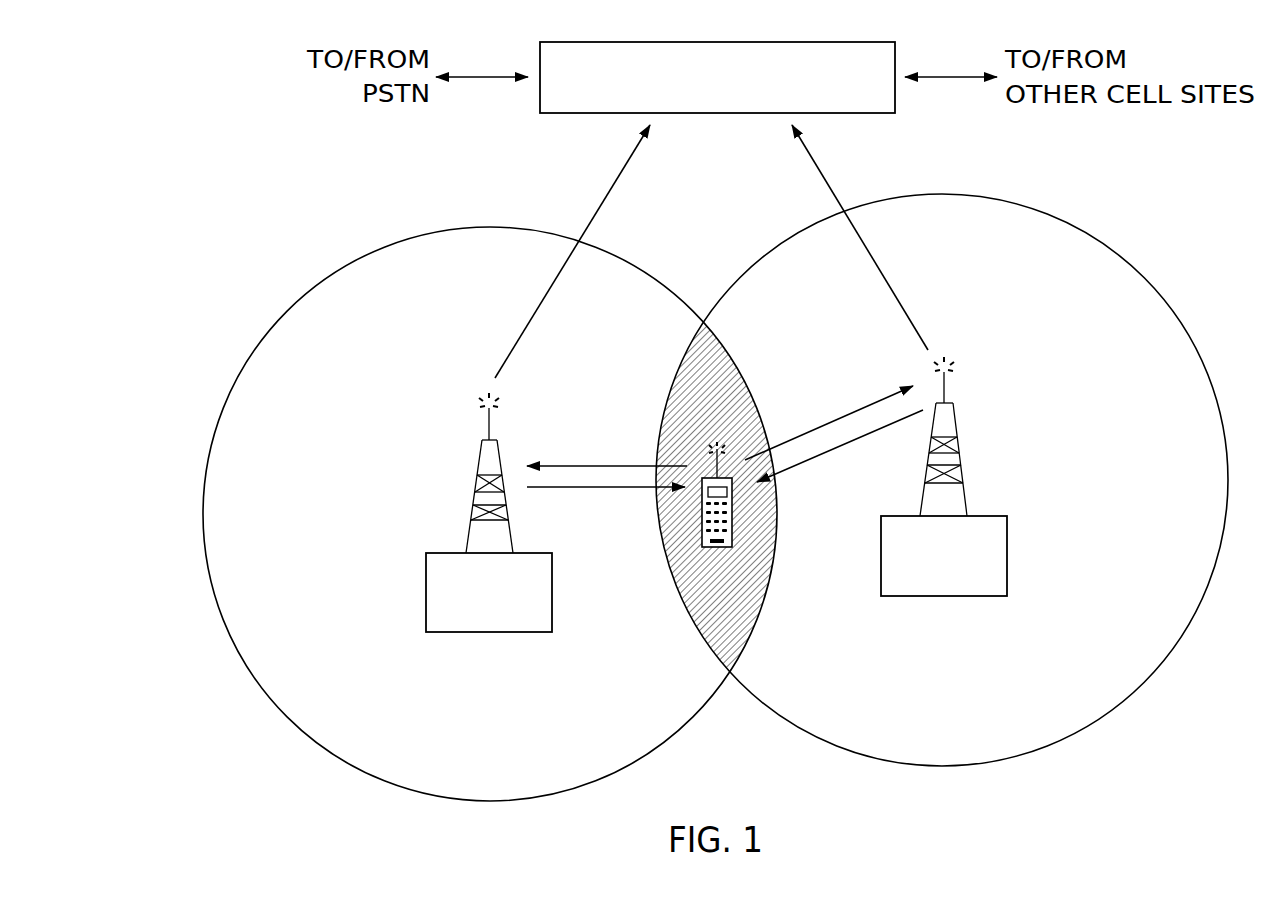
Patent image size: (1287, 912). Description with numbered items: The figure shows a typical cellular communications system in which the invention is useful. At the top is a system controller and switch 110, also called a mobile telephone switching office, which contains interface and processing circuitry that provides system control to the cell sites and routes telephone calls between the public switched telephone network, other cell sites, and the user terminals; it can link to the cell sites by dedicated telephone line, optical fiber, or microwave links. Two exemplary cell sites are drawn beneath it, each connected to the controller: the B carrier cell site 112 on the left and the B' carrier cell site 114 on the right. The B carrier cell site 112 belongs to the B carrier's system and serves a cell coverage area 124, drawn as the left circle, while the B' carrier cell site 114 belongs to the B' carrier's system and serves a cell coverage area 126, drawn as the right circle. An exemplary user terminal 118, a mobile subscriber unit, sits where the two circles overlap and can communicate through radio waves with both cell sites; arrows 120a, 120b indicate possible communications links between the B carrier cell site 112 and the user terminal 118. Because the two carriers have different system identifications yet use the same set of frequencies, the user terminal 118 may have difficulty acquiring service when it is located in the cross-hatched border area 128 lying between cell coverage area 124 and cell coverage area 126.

The system controller and switch 110 is at (850, 43).
The B carrier cell site 112 is at (440, 553).
The B' carrier cell site 114 is at (995, 516).
The user terminal 118 is at (710, 547).
The arrow 120a is at (636, 465).
The arrow 120b is at (568, 488).
The cell coverage area 124 is at (318, 283).
The cell coverage area 126 is at (1155, 289).
The border area 128 is at (728, 412).